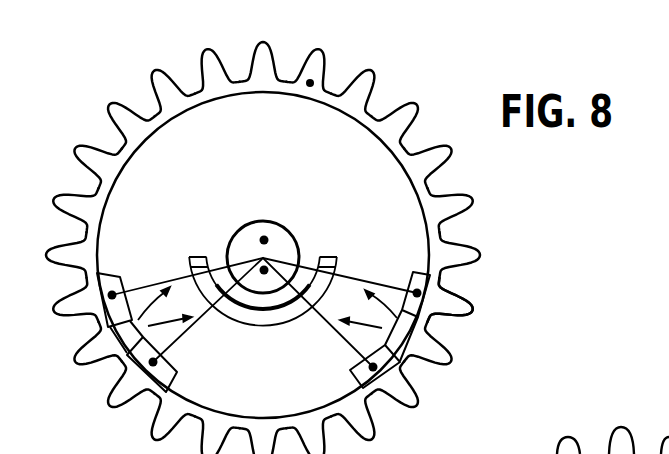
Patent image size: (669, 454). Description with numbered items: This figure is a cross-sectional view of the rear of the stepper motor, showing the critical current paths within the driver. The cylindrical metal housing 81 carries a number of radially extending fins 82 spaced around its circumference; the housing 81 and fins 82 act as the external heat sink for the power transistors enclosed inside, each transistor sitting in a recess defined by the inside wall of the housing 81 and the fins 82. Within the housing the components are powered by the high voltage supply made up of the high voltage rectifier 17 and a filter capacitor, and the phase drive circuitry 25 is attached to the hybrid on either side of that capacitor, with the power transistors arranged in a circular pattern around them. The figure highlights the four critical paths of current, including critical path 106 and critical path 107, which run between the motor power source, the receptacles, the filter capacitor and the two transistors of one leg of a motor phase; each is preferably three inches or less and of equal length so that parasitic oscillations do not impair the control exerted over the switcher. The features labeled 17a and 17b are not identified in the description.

The housing 81 is at (309, 81).
The radially extending fins 82 is at (469, 305).
The high voltage rectifier 17 is at (247, 224).
The hub pin 17a is at (265, 238).
The pivot carrier 17b is at (262, 268).
The phase drive circuitry 25 is at (336, 256).
The critical path 106 is at (150, 336).
The critical path 107 is at (400, 332).